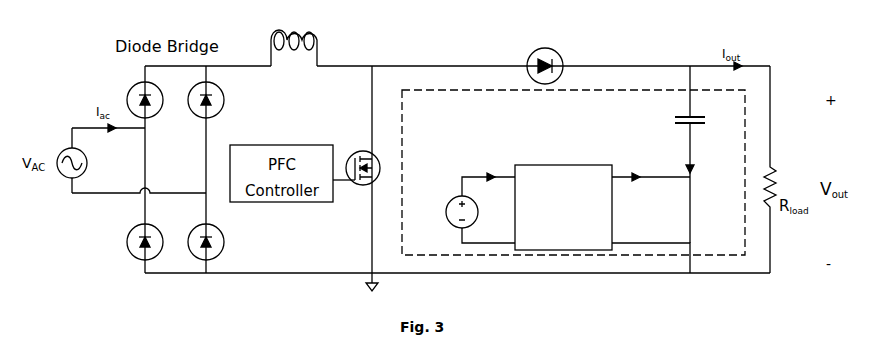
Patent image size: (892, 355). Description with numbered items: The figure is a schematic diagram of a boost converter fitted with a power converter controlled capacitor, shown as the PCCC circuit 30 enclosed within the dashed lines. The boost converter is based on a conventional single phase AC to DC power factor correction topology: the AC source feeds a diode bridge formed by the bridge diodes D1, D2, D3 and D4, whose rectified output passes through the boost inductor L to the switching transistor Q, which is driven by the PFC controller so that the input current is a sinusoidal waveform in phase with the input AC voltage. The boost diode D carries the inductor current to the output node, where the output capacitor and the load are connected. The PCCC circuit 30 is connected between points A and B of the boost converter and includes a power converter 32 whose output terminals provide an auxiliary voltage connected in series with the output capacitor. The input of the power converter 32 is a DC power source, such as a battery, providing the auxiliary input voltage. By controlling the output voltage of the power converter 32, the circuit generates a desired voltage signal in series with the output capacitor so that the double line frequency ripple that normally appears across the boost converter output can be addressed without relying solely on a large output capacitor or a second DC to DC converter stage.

The PCCC circuit 30 is at (557, 148).
The power converter 32 is at (565, 164).
The bridge diode D1 is at (151, 96).
The bridge diode D2 is at (212, 96).
The bridge diode D3 is at (207, 235).
The bridge diode D4 is at (146, 235).
The PFC switch transistor Q is at (367, 162).
The PFC inductor L is at (294, 37).
The PFC output diode D is at (545, 59).